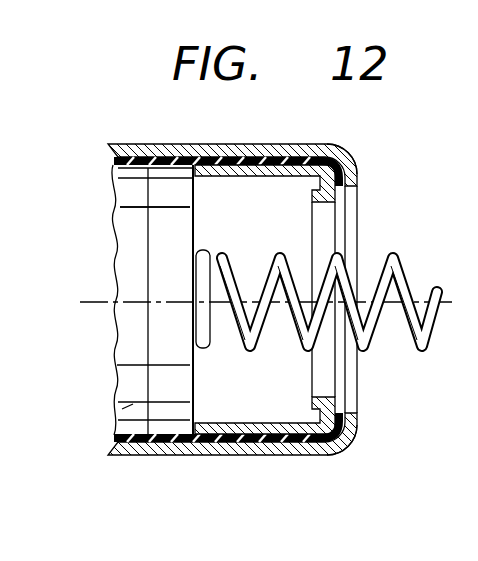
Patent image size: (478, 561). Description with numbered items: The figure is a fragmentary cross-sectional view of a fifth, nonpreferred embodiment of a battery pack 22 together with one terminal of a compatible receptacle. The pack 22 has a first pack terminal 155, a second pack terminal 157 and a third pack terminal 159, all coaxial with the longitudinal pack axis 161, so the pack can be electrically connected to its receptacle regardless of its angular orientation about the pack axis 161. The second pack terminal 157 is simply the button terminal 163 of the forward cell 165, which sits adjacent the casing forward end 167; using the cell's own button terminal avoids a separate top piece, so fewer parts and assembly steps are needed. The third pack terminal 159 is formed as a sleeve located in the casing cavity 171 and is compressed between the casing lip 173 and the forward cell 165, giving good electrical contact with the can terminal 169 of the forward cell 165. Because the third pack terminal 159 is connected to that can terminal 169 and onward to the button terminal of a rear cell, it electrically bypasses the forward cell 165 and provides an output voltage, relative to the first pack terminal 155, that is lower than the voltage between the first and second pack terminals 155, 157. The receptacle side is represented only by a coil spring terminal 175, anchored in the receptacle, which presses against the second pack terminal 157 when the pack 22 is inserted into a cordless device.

The battery pack 22 is at (349, 143).
The first pack terminal 155 is at (232, 144).
The second pack terminal 157 is at (202, 243).
The third pack terminal 159 is at (323, 395).
The longitudinal pack axis 161 is at (88, 302).
The button terminal 163 is at (200, 262).
The forward cell 165 is at (135, 403).
The casing forward end 167 is at (213, 143).
The can terminal 169 is at (133, 337).
The casing cavity 171 is at (322, 215).
The casing lip 173 is at (343, 446).
The coil spring terminal 175 is at (372, 270).